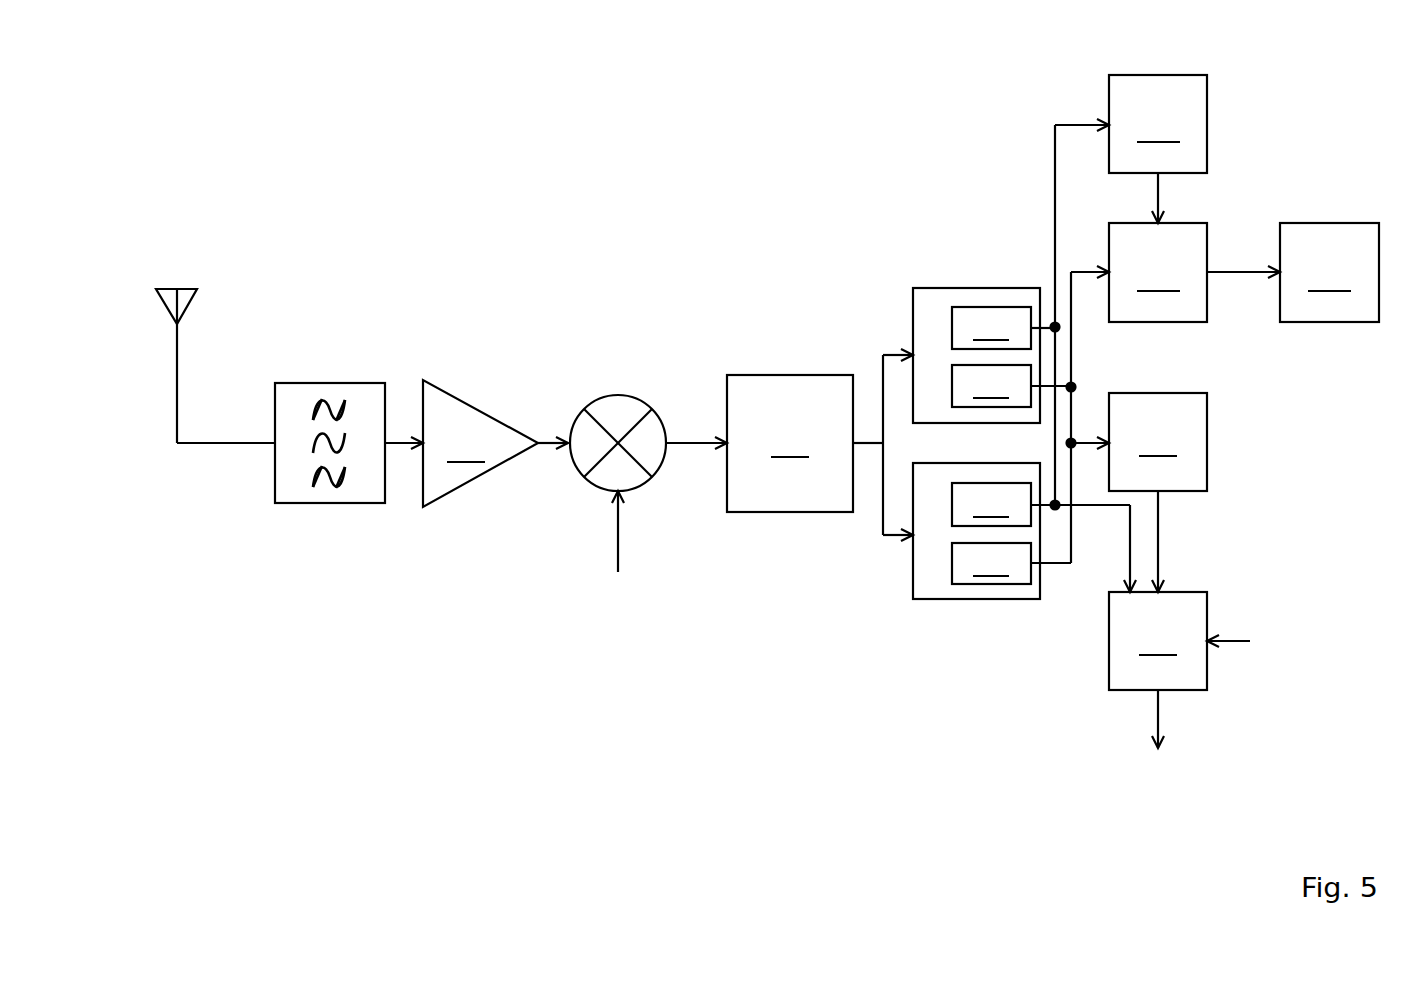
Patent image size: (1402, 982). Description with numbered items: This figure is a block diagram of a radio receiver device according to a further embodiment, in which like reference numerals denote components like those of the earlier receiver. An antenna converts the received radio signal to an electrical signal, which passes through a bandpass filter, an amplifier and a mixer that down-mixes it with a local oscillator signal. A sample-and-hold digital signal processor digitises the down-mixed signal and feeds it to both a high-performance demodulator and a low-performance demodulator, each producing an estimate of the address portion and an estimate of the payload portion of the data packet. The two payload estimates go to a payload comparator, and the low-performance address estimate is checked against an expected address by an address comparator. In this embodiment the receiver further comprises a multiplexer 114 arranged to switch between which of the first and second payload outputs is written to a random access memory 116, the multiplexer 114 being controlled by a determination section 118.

The multiplexer 114 is at (1158, 272).
The random access memory 116 is at (1329, 272).
The determination section 118 is at (1158, 124).